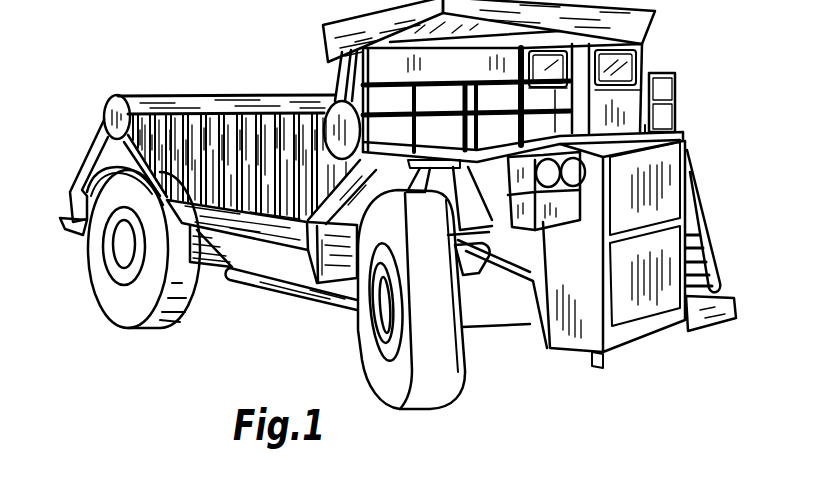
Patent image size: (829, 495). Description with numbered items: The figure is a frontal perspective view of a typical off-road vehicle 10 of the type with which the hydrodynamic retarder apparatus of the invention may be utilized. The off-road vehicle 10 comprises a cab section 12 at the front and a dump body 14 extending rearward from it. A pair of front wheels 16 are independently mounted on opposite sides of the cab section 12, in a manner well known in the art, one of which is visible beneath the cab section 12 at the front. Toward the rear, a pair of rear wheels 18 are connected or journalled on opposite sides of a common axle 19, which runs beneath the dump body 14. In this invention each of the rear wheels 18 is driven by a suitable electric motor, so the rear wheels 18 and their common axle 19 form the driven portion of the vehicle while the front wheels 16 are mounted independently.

The off-road vehicle 10 is at (291, 78).
The cab section 12 is at (645, 64).
The dump body 14 is at (178, 95).
The front wheels 16 is at (462, 374).
The rear wheels 18 is at (194, 308).
The common axle 19 is at (212, 264).